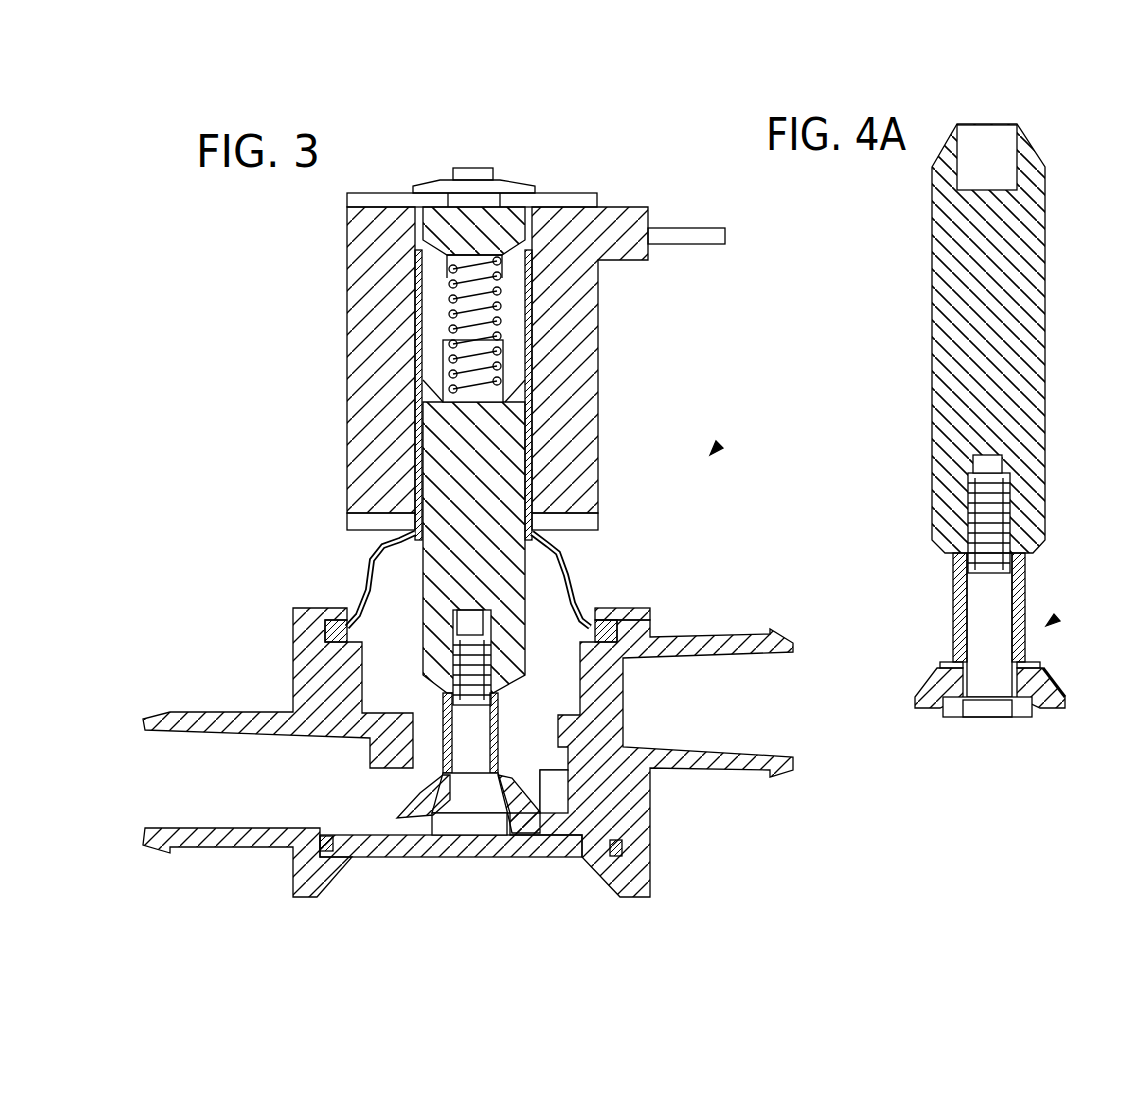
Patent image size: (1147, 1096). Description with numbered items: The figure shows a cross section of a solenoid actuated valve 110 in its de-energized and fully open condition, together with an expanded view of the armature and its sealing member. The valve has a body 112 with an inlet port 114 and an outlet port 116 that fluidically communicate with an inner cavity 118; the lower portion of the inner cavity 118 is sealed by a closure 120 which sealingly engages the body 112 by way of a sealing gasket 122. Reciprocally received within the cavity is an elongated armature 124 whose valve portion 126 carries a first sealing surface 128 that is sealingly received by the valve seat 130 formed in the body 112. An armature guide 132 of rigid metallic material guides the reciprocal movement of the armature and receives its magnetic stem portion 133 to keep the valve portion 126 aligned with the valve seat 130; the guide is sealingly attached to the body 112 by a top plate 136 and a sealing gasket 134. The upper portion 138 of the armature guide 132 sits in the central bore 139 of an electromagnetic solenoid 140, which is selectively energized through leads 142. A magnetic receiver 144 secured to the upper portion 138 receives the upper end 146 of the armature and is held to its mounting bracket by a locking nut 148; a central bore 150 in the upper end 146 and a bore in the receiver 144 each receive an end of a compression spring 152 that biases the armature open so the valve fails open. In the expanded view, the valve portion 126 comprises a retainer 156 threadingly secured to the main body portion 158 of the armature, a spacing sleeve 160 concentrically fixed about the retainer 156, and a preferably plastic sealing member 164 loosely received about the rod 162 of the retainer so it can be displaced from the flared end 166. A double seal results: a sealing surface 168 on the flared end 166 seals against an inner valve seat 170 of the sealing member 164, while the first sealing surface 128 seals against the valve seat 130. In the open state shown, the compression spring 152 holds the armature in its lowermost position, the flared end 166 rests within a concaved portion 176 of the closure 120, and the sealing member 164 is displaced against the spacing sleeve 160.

In FIG. 3, the solenoid actuated valve 110 is at (712, 452).
In FIG. 3, the body 112 is at (310, 680).
In FIG. 3, the inlet port 114 is at (220, 818).
In FIG. 3, the outlet port 116 is at (720, 660).
In FIG. 3, the inner cavity 118 is at (508, 566).
In FIG. 3, the closure 120 is at (628, 897).
In FIG. 3, the sealing gasket 122 is at (630, 848).
In FIG. 3, the elongated armature 124 is at (386, 536).
In FIG. 4A, the elongated armature 124 is at (992, 338).
In FIG. 3, the valve portion 126 is at (425, 798).
In FIG. 4A, the valve portion 126 is at (989, 683).
In FIG. 3, the first sealing surface 128 is at (420, 793).
In FIG. 4A, the first sealing surface 128 is at (937, 680).
In FIG. 3, the valve seat 130 is at (512, 752).
In FIG. 3, the armature guide 132 is at (555, 552).
In FIG. 3, the stem portion 133 is at (435, 445).
In FIG. 4A, the stem portion 133 is at (1030, 368).
In FIG. 3, the sealing gasket 134 is at (643, 620).
In FIG. 3, the top plate 136 is at (336, 622).
In FIG. 3, the upper portion 138 is at (415, 332).
In FIG. 3, the central bore 139 is at (535, 445).
In FIG. 3, the electromagnetic solenoid 140 is at (585, 366).
In FIG. 3, the leads 142 is at (690, 228).
In FIG. 3, the receiver 144 is at (435, 230).
In FIG. 3, the upper end 146 is at (597, 196).
In FIG. 3, the locking nut 148 is at (515, 186).
In FIG. 3, the central bore 150 is at (430, 400).
In FIG. 4A, the central bore 150 is at (1030, 170).
In FIG. 3, the compression spring 152 is at (500, 322).
In FIG. 4A, the retainer 156 is at (1030, 705).
In FIG. 3, the main body portion 158 is at (445, 272).
In FIG. 4A, the main body portion 158 is at (1035, 495).
In FIG. 4A, the spacing sleeve 160 is at (1025, 583).
In FIG. 4A, the rod 162 is at (965, 607).
In FIG. 4A, the sealing member 164 is at (1052, 682).
In FIG. 3, the flared end 166 is at (500, 850).
In FIG. 4A, the flared end 166 is at (950, 708).
In FIG. 4A, the sealing surface 168 is at (964, 692).
In FIG. 4A, the inner valve seat 170 is at (1005, 712).
In FIG. 3, the concaved portion 176 is at (445, 845).